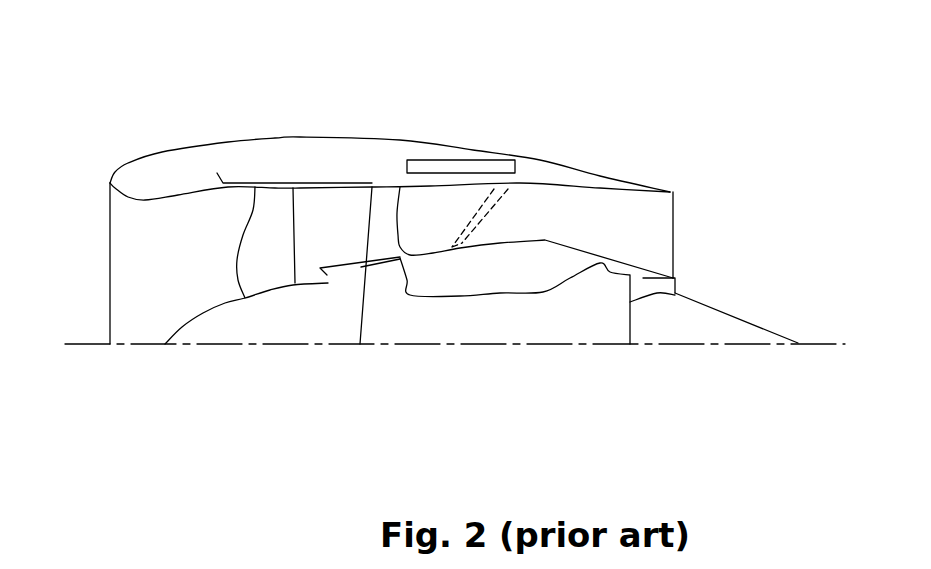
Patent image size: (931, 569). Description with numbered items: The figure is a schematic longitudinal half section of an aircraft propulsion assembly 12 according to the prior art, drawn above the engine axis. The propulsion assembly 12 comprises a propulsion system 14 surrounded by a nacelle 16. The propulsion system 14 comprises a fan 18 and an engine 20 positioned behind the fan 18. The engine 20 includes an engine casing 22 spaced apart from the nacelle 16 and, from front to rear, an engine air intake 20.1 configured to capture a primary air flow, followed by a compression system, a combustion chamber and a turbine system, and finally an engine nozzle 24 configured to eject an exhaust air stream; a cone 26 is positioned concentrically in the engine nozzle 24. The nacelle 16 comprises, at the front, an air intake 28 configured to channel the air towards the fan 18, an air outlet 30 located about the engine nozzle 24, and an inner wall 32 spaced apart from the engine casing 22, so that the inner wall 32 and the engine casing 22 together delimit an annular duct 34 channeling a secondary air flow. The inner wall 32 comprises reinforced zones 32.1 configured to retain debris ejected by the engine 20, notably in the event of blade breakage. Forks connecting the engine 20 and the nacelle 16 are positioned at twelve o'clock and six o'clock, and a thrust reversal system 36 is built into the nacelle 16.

The propulsion assembly 12 is at (160, 90).
The propulsion system 14 is at (430, 352).
The nacelle 16 is at (299, 138).
The fan 18 is at (236, 266).
The engine 20 is at (532, 309).
The engine air intake 20.1 is at (327, 275).
The engine casing 22 is at (549, 237).
The engine nozzle 24 is at (648, 273).
The cone 26 is at (728, 314).
The air intake 28 is at (110, 182).
The air outlet 30 is at (673, 192).
The inner wall 32 is at (430, 188).
The reinforced zones 32.1 is at (323, 188).
The annular duct 34 is at (495, 218).
The thrust reversal system 36 is at (481, 156).